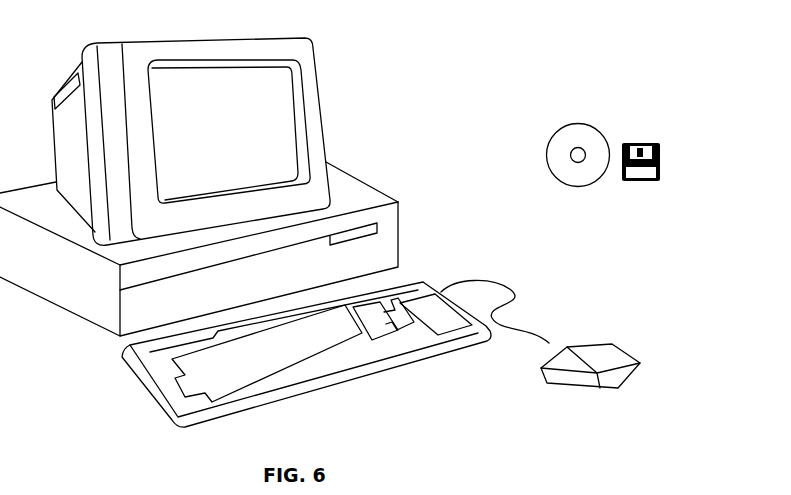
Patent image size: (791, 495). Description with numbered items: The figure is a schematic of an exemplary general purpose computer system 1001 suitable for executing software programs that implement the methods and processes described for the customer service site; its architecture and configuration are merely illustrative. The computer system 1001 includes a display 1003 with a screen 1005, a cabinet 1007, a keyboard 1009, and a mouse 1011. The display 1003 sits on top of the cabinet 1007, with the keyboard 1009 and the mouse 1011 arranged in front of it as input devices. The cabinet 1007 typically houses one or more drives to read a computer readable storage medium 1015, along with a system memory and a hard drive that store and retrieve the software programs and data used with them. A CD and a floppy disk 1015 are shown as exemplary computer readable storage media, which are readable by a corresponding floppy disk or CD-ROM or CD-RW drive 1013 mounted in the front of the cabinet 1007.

The computer system 1001 is at (502, 65).
The display 1003 is at (325, 137).
The screen 1005 is at (292, 87).
The cabinet 1007 is at (75, 323).
The keyboard 1009 is at (310, 393).
The mouse 1011 is at (621, 348).
The floppy disk or CD-ROM or CD-RW drive 1013 is at (377, 223).
The computer readable storage medium 1015 is at (623, 114).